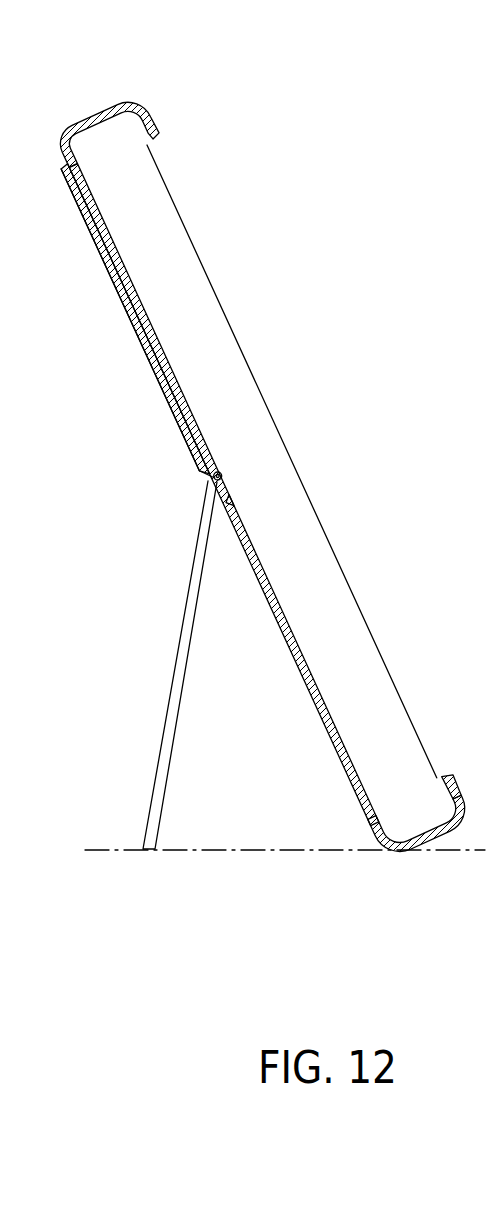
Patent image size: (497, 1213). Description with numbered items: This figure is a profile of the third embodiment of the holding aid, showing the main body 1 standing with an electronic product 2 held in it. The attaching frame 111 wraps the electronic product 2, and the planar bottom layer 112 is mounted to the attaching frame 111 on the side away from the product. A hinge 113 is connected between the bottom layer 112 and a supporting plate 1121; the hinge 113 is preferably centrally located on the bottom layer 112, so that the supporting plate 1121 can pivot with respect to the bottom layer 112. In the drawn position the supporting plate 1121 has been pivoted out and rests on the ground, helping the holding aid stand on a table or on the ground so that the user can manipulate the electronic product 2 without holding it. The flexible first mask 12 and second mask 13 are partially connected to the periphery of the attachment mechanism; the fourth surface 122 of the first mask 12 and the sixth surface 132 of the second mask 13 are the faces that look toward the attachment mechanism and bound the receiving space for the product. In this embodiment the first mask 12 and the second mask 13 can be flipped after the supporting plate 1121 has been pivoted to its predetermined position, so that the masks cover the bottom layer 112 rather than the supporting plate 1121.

The main body 1 is at (248, 440).
The electronic product 2 is at (325, 570).
The first mask 12 is at (137, 323).
The fourth surface 122 is at (130, 320).
The attaching frame 111 is at (107, 135).
The bottom layer 112 is at (224, 495).
The hinge 113 is at (213, 476).
The supporting plate 1121 is at (195, 603).
The second mask 13 is at (418, 816).
The sixth surface 132 is at (452, 785).